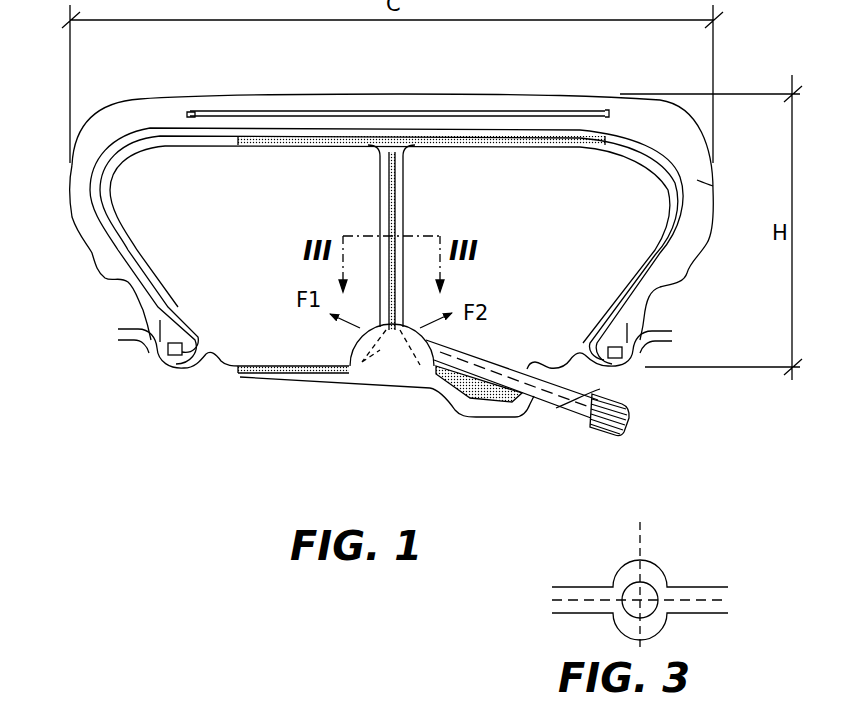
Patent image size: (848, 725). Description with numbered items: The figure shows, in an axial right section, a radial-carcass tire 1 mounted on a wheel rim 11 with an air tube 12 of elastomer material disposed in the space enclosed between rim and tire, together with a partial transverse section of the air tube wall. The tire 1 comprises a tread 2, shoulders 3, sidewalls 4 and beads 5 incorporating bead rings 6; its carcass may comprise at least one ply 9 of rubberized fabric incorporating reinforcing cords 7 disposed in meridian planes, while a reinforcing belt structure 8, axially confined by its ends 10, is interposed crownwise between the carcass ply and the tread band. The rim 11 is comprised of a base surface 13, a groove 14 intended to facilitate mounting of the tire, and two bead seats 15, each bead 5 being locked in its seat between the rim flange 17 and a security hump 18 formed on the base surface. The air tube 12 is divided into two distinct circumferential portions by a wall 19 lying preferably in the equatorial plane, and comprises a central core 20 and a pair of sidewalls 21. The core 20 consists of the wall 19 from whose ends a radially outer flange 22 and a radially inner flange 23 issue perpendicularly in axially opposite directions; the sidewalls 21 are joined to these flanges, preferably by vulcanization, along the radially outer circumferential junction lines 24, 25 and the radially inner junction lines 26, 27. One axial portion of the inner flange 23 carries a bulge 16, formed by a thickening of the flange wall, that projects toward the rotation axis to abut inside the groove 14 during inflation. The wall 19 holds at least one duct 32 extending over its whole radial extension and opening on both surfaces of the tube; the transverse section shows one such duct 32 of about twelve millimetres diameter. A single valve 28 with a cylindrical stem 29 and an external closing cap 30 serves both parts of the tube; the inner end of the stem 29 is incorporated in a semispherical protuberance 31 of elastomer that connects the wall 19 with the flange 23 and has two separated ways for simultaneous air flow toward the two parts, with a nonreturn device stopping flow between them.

In FIG. 1, the radial-carcass tire 1 is at (285, 91).
In FIG. 1, the tread 2 is at (395, 98).
In FIG. 1, the shoulders 3 is at (680, 113).
In FIG. 1, the sidewalls 4 is at (80, 222).
In FIG. 1, the beads 5 is at (150, 355).
In FIG. 1, the bead rings 6 is at (168, 357).
In FIG. 1, the reinforcing cords 7 is at (700, 184).
In FIG. 1, the reinforcing belt structure 8 is at (463, 112).
In FIG. 1, the ply 9 is at (131, 120).
In FIG. 1, the ends 10 is at (188, 111).
In FIG. 1, the wheel rim 11 is at (251, 392).
In FIG. 1, the air tube 12 is at (513, 155).
In FIG. 1, the base surface 13 is at (327, 385).
In FIG. 1, the groove 14 is at (490, 420).
In FIG. 1, the bead seats 15 is at (180, 369).
In FIG. 1, the bulge 16 is at (466, 400).
In FIG. 1, the rim flange 17 is at (147, 340).
In FIG. 1, the security hump 18 is at (207, 364).
In FIG. 1, the wall 19 is at (376, 183).
In FIG. 1, the central core 20 is at (404, 180).
In FIG. 3, the central core 20 is at (617, 586).
In FIG. 1, the sidewalls 21 is at (117, 228).
In FIG. 1, the radially outer flange 22 is at (312, 147).
In FIG. 1, the radially inner flange 23 is at (290, 366).
In FIG. 1, the circumferential junction line 24 is at (240, 148).
In FIG. 1, the circumferential junction line 25 is at (546, 146).
In FIG. 1, the circumferential junction line 26 is at (237, 365).
In FIG. 1, the circumferential junction line 27 is at (540, 363).
In FIG. 1, the valve 28 is at (580, 428).
In FIG. 1, the cylindrical stem 29 is at (560, 408).
In FIG. 1, the closing cap 30 is at (612, 430).
In FIG. 1, the protuberance 31 is at (390, 363).
In FIG. 3, the duct 32 is at (647, 595).